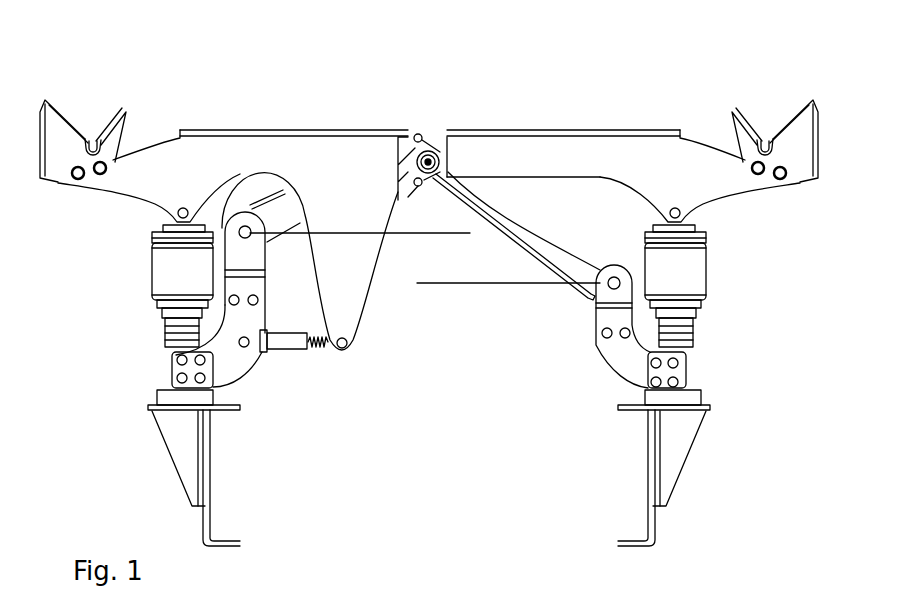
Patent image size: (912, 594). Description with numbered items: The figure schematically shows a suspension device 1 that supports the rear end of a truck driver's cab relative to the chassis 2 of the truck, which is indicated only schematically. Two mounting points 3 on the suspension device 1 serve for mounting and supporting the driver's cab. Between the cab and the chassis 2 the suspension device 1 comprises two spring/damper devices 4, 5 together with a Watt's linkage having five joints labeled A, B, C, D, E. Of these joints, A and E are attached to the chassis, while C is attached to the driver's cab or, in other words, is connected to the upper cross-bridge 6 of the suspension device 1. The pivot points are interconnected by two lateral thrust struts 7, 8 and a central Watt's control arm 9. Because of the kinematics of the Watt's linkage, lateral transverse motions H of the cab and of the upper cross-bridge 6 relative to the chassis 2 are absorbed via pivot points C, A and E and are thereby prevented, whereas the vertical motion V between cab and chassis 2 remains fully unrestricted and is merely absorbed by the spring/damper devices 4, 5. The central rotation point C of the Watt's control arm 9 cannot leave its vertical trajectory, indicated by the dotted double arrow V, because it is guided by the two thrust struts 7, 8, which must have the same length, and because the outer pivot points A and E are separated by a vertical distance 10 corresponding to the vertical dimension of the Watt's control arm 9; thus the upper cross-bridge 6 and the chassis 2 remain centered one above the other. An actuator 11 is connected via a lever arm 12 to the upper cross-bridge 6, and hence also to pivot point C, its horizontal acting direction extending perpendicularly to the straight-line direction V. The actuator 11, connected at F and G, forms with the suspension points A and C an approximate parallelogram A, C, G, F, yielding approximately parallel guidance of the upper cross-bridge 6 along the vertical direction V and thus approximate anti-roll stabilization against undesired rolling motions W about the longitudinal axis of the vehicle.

The suspension device 1 is at (439, 397).
The chassis 2 is at (224, 496).
The mounting points 3 is at (92, 112).
The spring/damper device 4 is at (128, 269).
The spring/damper device 5 is at (730, 269).
The upper cross-bridge 6 is at (612, 152).
The lateral thrust strut 7 is at (275, 217).
The lateral thrust strut 8 is at (573, 262).
The Watt's control arm 9 is at (400, 170).
The vertical distance 10 is at (445, 240).
The actuator 11 is at (290, 341).
The lever arm 12 is at (355, 253).
The joint A is at (242, 214).
The joint B is at (411, 130).
The joint C is at (442, 171).
The joint D is at (409, 193).
The joint E is at (616, 268).
The actuator connection point F is at (252, 354).
The actuator connection point G is at (348, 352).
The lateral transverse motions H is at (495, 23).
The vertical motion V is at (430, 222).
The rolling motions W is at (350, 160).